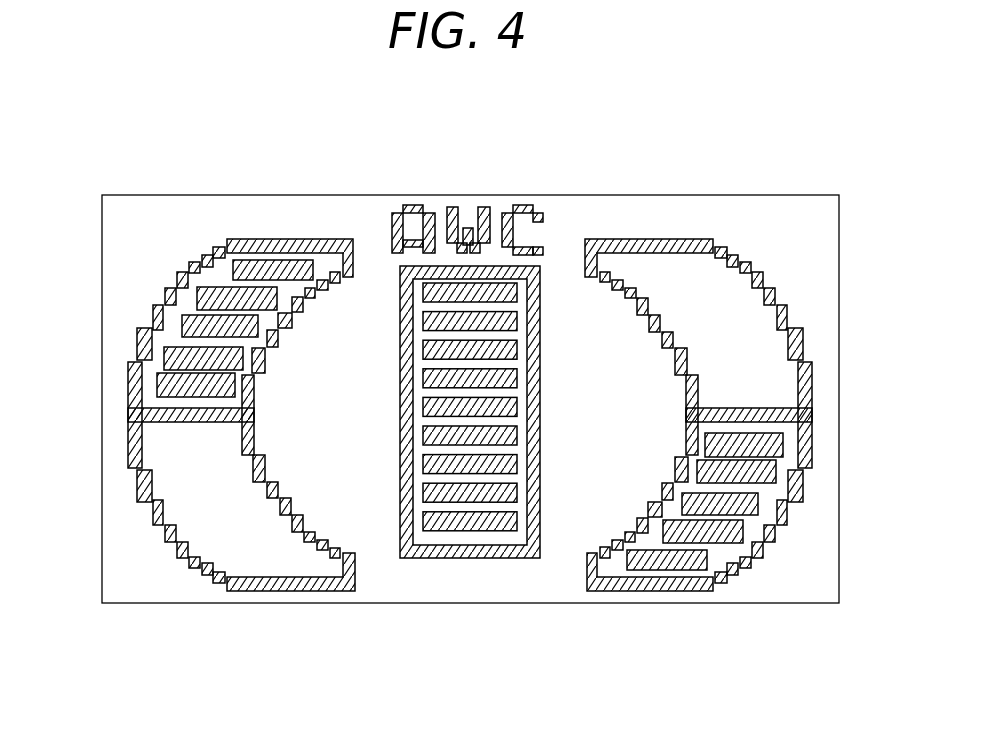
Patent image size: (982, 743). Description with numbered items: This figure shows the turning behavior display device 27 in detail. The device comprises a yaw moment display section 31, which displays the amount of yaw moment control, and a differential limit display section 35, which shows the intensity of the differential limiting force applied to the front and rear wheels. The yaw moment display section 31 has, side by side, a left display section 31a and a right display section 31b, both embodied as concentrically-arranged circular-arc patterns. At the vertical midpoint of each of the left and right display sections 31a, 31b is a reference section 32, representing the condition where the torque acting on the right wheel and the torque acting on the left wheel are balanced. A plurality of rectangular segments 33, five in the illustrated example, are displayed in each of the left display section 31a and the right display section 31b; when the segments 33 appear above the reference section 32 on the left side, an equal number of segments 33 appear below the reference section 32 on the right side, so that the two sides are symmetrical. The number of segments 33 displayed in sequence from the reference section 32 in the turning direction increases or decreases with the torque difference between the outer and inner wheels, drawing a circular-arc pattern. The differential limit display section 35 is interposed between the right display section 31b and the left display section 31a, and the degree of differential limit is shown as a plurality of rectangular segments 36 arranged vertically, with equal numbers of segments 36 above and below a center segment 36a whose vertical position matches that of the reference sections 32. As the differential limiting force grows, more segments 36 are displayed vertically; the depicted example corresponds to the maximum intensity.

The turning behavior display device 27 is at (607, 197).
The yaw moment display section 31 is at (731, 243).
The left display section 31a is at (149, 534).
The right display section 31b is at (821, 334).
The reference section 32 is at (177, 417).
The rectangular segment 33 is at (177, 347).
The differential limit display section 35 is at (388, 285).
The rectangular segment 36 is at (448, 518).
The center segment 36a is at (510, 408).